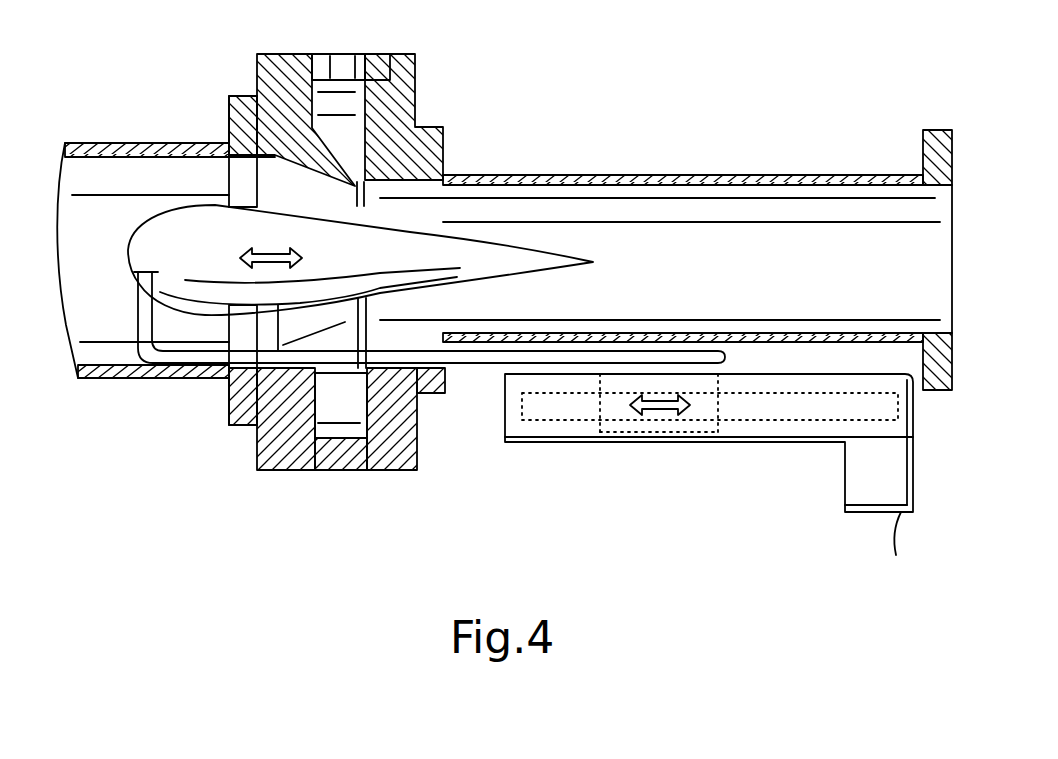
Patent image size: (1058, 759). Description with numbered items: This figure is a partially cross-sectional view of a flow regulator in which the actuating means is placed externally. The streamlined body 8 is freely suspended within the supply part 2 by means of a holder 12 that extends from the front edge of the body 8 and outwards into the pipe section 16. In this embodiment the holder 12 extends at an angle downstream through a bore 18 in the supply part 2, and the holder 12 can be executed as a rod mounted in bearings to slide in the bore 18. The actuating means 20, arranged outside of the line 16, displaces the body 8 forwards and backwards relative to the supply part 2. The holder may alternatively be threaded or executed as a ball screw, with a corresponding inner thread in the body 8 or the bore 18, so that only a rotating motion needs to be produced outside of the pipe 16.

The supply part 2 is at (275, 516).
The streamlined body 8 is at (178, 215).
The holder 12 is at (193, 352).
The pipe section 16 is at (561, 158).
The bore 18 is at (432, 392).
The actuating means 20 is at (720, 492).